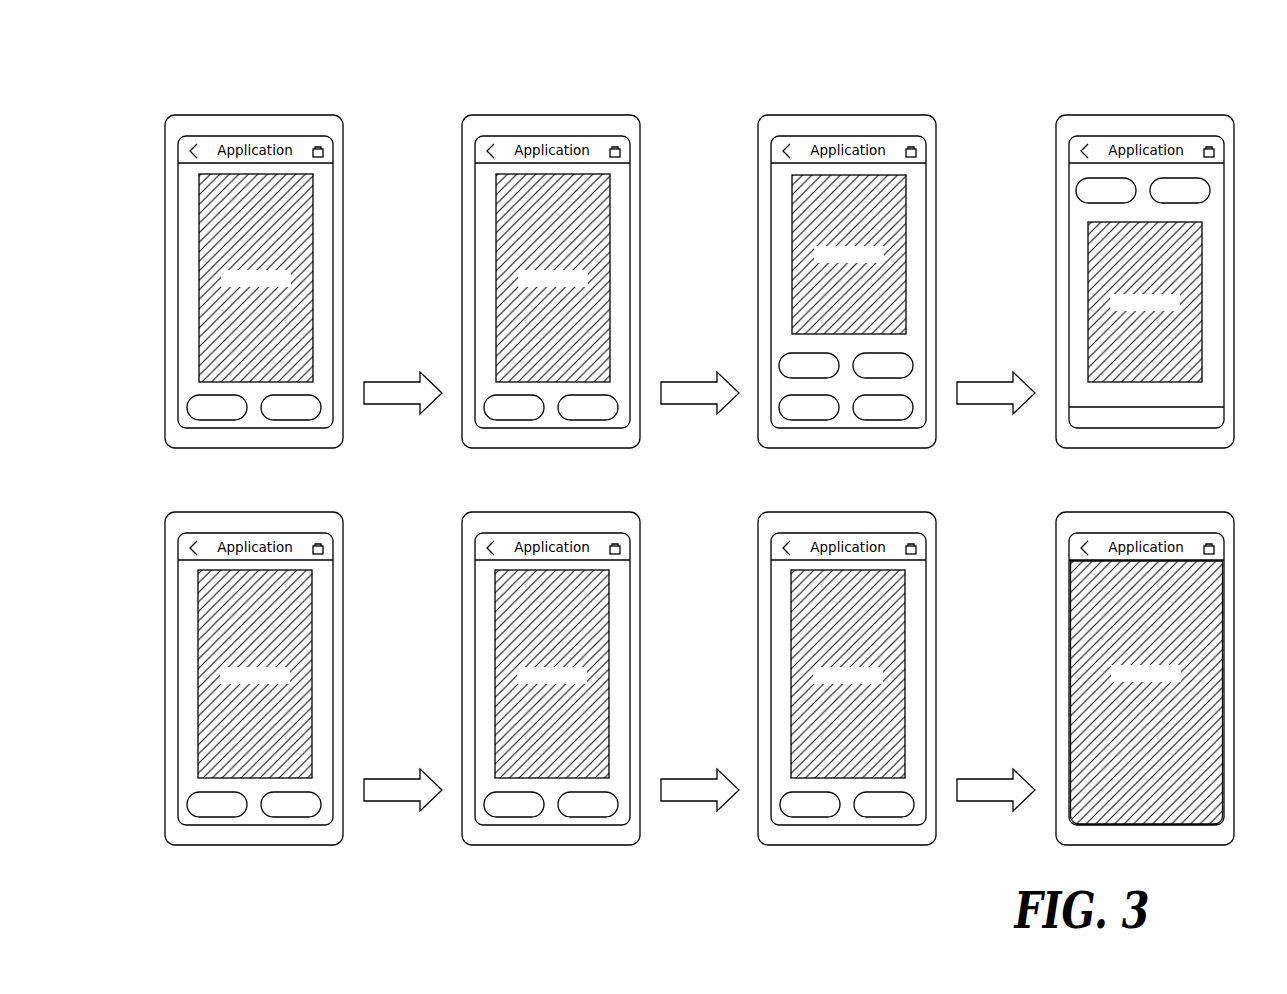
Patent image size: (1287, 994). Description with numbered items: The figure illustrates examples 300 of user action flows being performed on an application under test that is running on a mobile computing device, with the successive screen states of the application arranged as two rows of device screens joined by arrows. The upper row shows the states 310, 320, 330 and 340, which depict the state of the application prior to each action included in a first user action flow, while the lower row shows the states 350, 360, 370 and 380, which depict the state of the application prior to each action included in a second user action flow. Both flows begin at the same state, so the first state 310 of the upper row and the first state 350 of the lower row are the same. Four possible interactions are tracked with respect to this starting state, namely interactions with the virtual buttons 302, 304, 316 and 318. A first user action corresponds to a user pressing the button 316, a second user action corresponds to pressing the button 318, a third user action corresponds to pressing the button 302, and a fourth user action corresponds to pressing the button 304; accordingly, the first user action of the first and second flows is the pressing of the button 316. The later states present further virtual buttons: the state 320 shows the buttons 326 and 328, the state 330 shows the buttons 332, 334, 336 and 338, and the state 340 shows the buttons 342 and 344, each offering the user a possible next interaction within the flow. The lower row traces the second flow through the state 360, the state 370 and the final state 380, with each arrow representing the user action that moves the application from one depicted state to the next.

The examples 300 is at (112, 66).
The virtual button 302 is at (231, 277).
The virtual button 304 is at (280, 261).
The state of the AUT 310 is at (251, 254).
The virtual button 316 is at (217, 407).
The virtual button 318 is at (291, 407).
The state of the AUT 320 is at (548, 254).
The button 326 is at (514, 407).
The button 328 is at (588, 407).
The state of the AUT 330 is at (844, 254).
The button 332 is at (809, 365).
The button 334 is at (883, 365).
The button 336 is at (809, 407).
The button 338 is at (883, 407).
The state of the AUT 340 is at (1142, 254).
The button 342 is at (1106, 190).
The button 344 is at (1180, 190).
The state of the AUT 350 is at (251, 651).
The state of the AUT 360 is at (548, 651).
The state of the AUT 370 is at (844, 651).
The state of the AUT 380 is at (1142, 651).